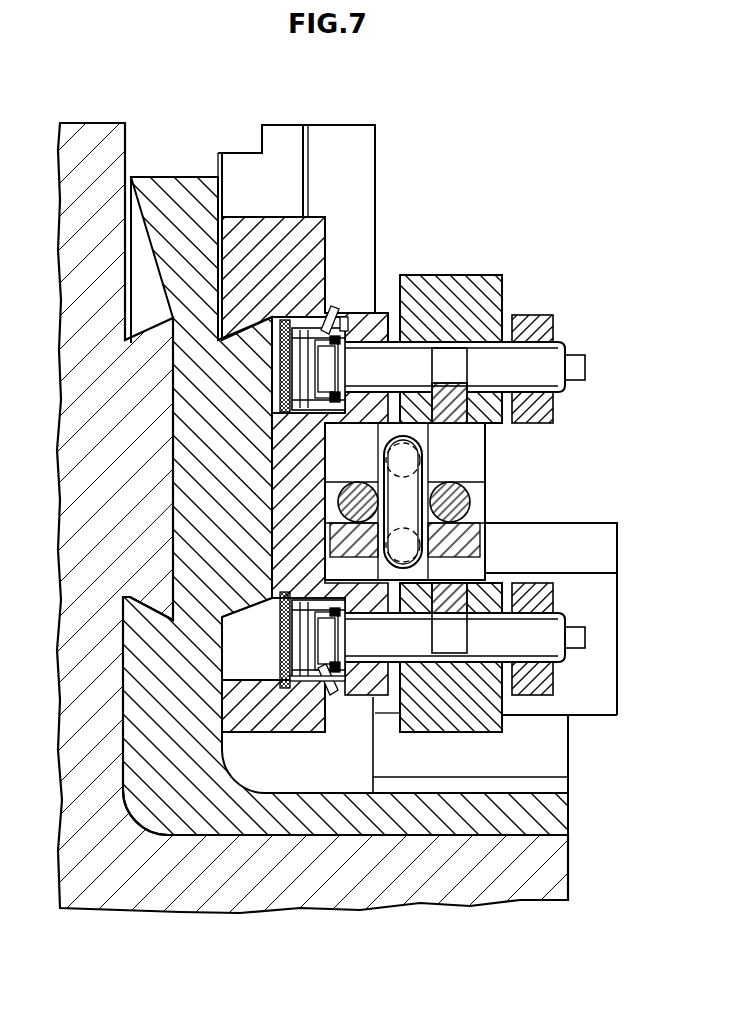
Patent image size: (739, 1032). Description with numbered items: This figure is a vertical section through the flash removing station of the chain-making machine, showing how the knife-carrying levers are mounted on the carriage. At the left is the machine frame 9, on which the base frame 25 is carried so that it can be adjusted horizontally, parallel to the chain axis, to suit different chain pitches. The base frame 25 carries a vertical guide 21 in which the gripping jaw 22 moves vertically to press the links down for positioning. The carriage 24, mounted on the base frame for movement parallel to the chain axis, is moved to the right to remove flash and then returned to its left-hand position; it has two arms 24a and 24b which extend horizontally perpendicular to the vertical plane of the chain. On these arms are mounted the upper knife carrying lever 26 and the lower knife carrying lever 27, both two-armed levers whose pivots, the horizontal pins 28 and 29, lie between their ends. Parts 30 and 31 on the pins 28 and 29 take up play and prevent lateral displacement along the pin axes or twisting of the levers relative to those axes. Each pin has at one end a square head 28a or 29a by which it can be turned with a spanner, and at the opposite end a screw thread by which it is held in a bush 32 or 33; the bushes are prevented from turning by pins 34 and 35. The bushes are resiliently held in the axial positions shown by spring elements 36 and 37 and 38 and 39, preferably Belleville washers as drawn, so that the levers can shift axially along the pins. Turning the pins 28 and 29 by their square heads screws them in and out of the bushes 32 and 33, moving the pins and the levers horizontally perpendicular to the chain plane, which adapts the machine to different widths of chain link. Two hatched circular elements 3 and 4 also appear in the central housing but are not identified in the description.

The first ball 3 is at (392, 486).
The second ball 4 is at (460, 495).
The machine frame 9 is at (193, 903).
The vertical guide 21 is at (220, 168).
The gripping jaw 22 is at (275, 135).
The carriage 24 is at (236, 697).
The arm 24a is at (522, 318).
The arm 24b is at (550, 684).
The base frame 25 is at (286, 812).
The upper knife carrying lever 26 is at (447, 282).
The lower knife carrying lever 27 is at (462, 723).
The horizontal pin 28 is at (548, 352).
The square head 28a is at (585, 367).
The horizontal pin 29 is at (545, 625).
The square head 29a is at (585, 640).
The play take-up part 30 is at (440, 415).
The play take-up part 31 is at (460, 588).
The bush 32 is at (333, 370).
The bush 33 is at (348, 645).
The pin 34 is at (330, 307).
The pin 35 is at (322, 690).
The spring element 36 is at (296, 323).
The spring element 37 is at (347, 322).
The spring element 38 is at (294, 642).
The spring element 39 is at (340, 688).